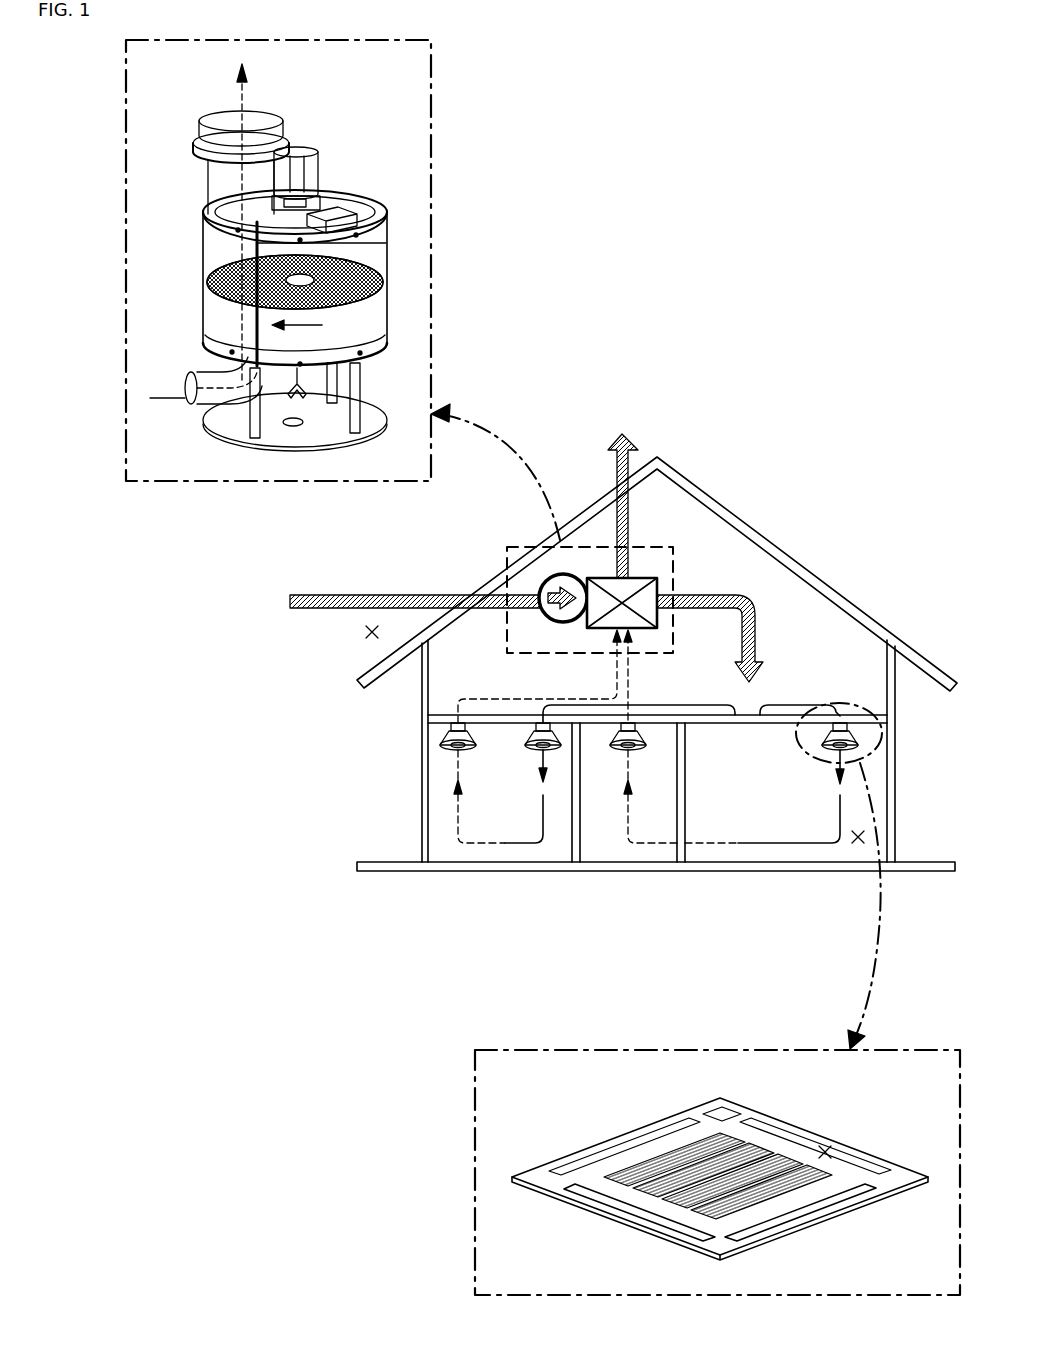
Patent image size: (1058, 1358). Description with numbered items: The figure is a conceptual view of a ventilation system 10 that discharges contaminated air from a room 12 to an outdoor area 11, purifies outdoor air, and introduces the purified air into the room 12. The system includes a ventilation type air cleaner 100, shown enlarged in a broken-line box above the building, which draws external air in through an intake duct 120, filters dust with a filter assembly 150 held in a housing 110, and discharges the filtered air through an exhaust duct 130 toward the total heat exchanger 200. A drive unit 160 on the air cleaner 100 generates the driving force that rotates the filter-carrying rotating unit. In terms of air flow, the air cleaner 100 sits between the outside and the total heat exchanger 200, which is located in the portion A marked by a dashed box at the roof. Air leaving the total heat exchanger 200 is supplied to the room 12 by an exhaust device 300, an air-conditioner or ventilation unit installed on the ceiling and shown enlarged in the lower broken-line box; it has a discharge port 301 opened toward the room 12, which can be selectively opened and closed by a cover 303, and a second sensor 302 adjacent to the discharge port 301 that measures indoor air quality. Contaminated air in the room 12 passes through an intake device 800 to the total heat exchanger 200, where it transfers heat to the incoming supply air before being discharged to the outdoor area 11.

The ventilation system 10 is at (937, 447).
The outdoor area 11 is at (366, 634).
The room 12 is at (858, 842).
The ventilation type air cleaner 100 is at (294, 260).
The housing 110 is at (212, 242).
The intake duct 120 is at (184, 386).
The exhaust duct 130 is at (208, 181).
The filter assembly 150 is at (353, 262).
The drive unit 160 is at (330, 166).
The total heat exchanger 200 is at (646, 577).
The exhaust device 300 is at (717, 1140).
The discharge port 301 is at (826, 1150).
The second sensor 302 is at (712, 1114).
The cover 303 is at (850, 1176).
The intake device 800 is at (622, 750).
The portion A is at (682, 565).